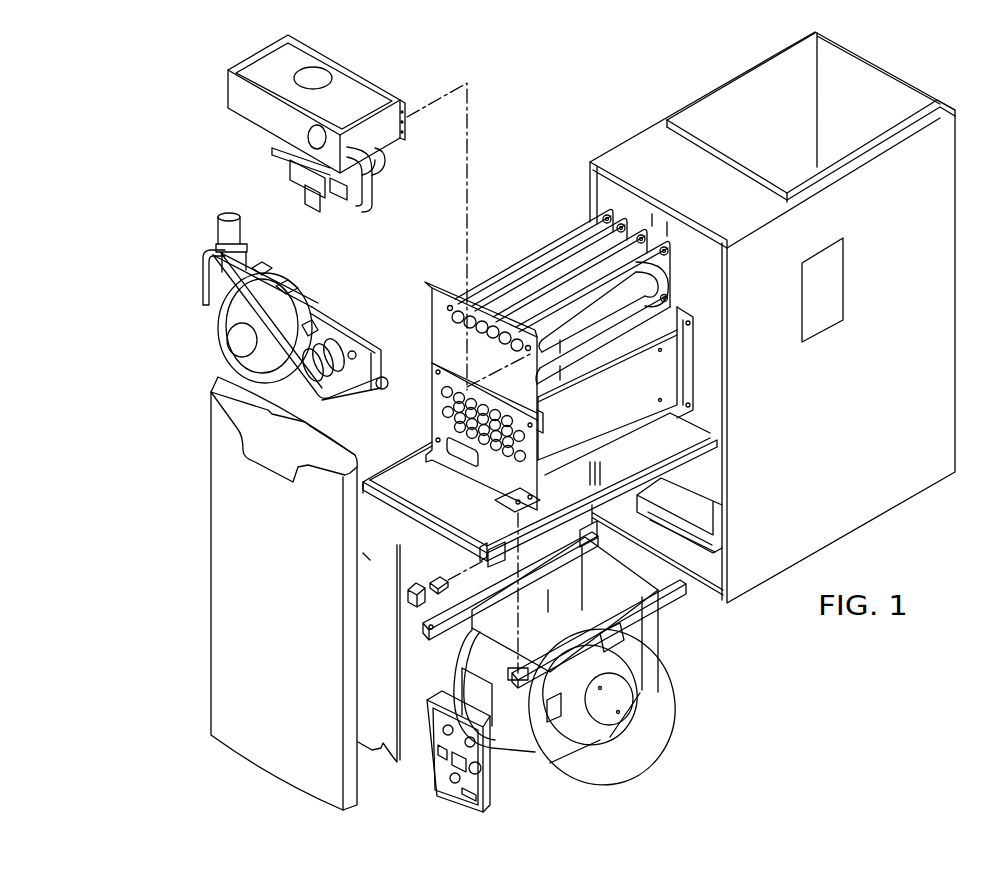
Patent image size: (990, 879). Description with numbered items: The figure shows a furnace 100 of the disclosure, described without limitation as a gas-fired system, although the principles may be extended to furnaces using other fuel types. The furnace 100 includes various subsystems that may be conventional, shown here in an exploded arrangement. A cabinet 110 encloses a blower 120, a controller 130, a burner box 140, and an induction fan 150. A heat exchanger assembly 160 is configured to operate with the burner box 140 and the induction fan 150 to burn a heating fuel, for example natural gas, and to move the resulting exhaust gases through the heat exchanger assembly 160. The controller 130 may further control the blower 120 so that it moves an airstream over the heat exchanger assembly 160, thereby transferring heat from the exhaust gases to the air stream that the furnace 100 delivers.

The furnace 100 is at (108, 521).
The cabinet 110 is at (872, 413).
The blower 120 is at (660, 661).
The controller 130 is at (440, 775).
The burner box 140 is at (228, 89).
The induction fan 150 is at (227, 220).
The heat exchanger assembly 160 is at (547, 245).